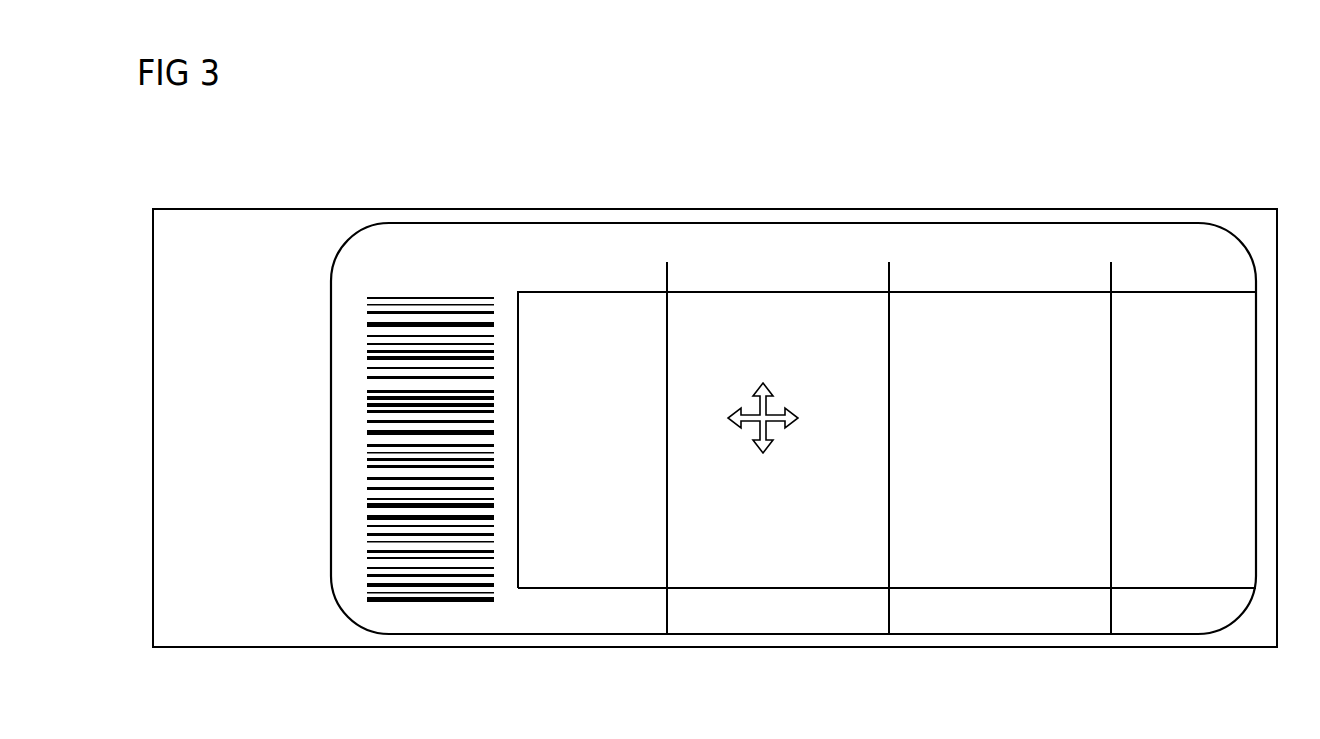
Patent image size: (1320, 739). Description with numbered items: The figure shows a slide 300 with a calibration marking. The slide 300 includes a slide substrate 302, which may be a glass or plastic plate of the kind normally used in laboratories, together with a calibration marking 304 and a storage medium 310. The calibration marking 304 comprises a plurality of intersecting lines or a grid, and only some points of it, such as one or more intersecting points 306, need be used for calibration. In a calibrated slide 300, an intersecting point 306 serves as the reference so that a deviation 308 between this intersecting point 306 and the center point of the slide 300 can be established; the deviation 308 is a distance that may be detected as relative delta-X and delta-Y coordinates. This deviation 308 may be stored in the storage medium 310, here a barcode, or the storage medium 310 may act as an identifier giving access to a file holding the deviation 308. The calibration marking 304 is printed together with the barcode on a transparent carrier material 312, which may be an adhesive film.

The slide 300 is at (424, 170).
The slide substrate 302 is at (176, 230).
The calibration marking 304 is at (796, 250).
The intersecting point 306 is at (1092, 251).
The deviation 308 is at (736, 391).
The storage medium 310 is at (354, 238).
The transparent carrier material 312 is at (478, 638).